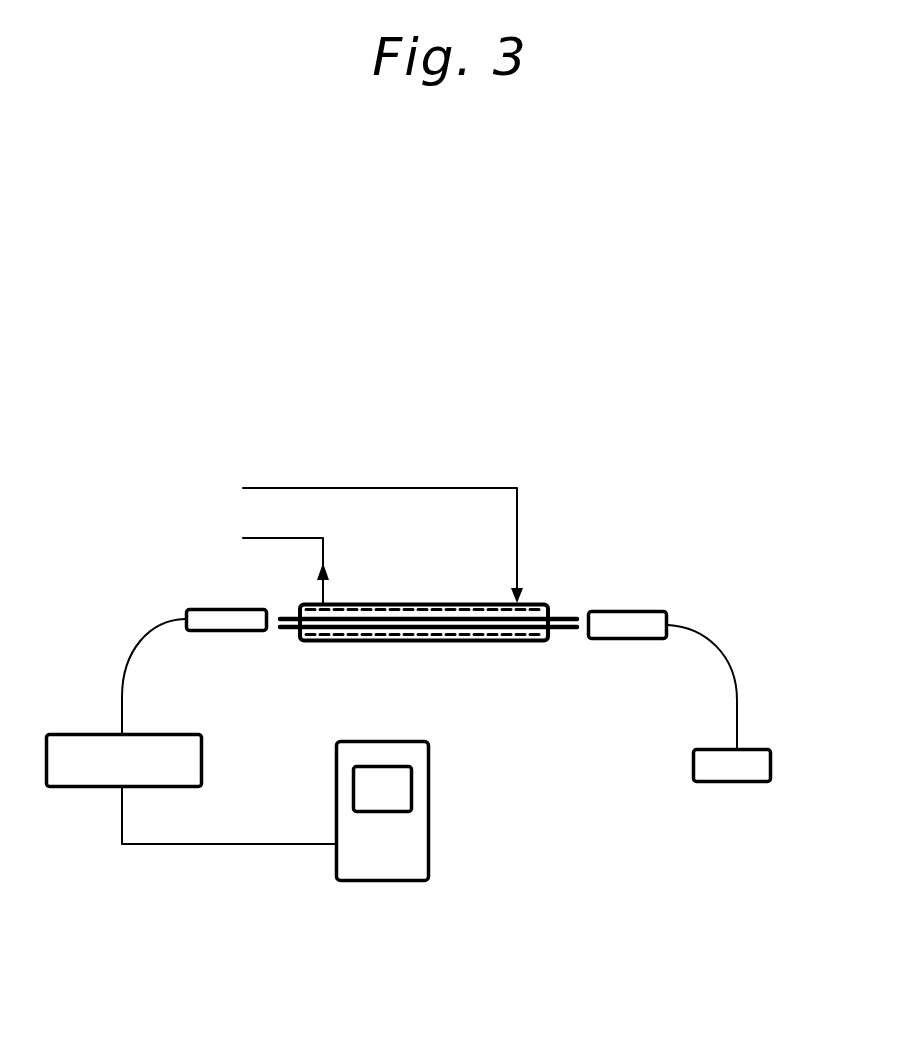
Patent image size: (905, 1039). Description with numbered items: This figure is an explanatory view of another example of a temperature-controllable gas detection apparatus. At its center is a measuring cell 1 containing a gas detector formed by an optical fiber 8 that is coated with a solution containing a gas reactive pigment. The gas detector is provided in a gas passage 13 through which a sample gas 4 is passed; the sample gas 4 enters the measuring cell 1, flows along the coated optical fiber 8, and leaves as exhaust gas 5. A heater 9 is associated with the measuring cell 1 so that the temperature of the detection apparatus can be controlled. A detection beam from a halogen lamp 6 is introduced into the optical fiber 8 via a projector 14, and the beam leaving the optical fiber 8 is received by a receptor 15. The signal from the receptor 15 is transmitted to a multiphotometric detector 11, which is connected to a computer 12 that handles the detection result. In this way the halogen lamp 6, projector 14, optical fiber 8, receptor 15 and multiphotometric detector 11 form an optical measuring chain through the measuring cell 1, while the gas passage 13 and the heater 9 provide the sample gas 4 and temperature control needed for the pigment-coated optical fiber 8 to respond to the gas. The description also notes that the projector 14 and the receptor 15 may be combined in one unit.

The measuring cell 1 is at (398, 643).
The sample gas 4 is at (393, 488).
The exhaust gas 5 is at (323, 542).
The halogen lamp 6 is at (772, 765).
The optical fiber 8 is at (435, 603).
The heater 9 is at (332, 643).
The multiphotometric detector 11 is at (65, 733).
The computer 12 is at (430, 838).
The gas passage 13 is at (497, 642).
The projector 14 is at (617, 610).
The receptor 15 is at (203, 608).